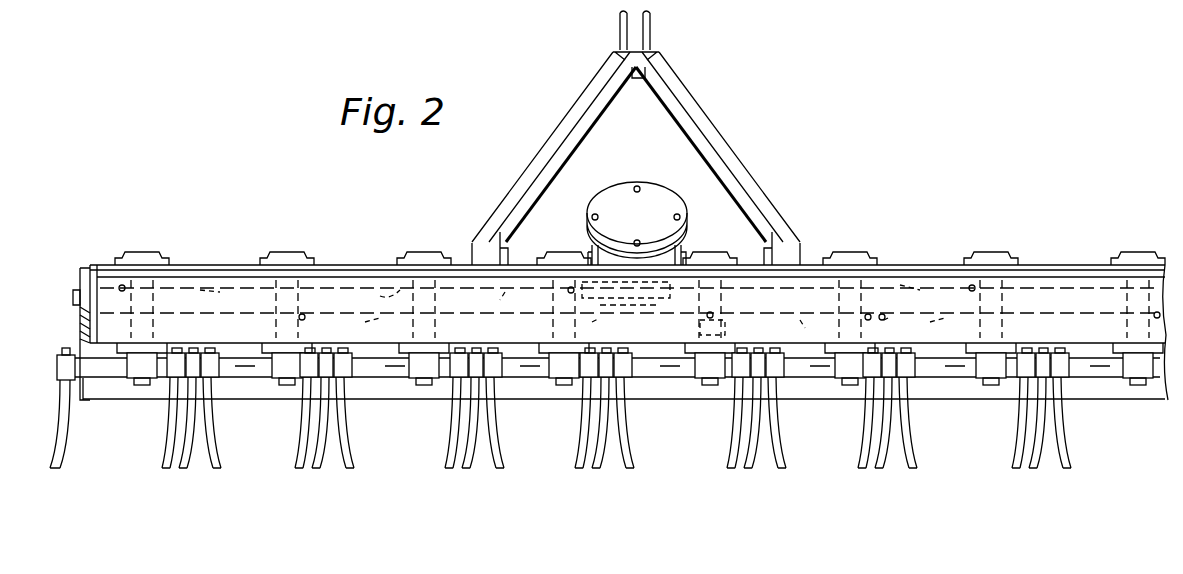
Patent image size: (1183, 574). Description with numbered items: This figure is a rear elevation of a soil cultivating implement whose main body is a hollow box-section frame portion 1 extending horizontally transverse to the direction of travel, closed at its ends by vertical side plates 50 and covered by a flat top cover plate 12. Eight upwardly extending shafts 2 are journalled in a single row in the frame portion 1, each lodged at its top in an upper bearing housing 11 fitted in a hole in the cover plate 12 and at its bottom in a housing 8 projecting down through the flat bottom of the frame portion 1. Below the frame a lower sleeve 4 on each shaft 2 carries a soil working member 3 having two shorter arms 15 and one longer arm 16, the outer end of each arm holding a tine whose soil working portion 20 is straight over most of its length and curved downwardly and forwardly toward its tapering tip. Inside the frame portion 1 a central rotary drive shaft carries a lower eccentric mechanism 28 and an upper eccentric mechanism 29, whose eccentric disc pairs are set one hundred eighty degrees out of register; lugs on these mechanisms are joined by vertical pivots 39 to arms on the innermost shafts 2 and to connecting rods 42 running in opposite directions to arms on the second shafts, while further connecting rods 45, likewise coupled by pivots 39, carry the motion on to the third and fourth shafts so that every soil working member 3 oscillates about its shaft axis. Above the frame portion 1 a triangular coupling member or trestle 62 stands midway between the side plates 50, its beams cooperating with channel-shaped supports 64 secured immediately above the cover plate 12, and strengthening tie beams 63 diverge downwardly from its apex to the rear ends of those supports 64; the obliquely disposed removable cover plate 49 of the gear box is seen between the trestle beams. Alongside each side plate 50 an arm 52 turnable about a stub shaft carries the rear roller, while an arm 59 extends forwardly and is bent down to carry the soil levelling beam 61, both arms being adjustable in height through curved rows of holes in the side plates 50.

The hollow box-section frame portion 1 is at (1068, 275).
The shaft 2 is at (235, 310).
The soil working member 3 is at (158, 456).
The lower sleeve 4 is at (263, 383).
The housing 8 is at (165, 348).
The upper bearing housing 11 is at (145, 252).
The flat top cover plate 12 is at (372, 265).
The shorter arm 15 is at (246, 378).
The longer arm 16 is at (158, 388).
The soil working portion 20 is at (312, 440).
The lower eccentric mechanism 28 is at (724, 334).
The upper eccentric mechanism 29 is at (615, 279).
The pivot 39 is at (733, 282).
The connecting rod 42 is at (505, 292).
The connecting rod 45 is at (215, 288).
The removable cover plate 49 is at (652, 195).
The side plate 50 is at (95, 330).
The arm 52 is at (84, 282).
The arm 59 is at (82, 405).
The soil levelling beam 61 is at (420, 398).
The coupling member or trestle 62 is at (723, 137).
The strengthening tie beam 63 is at (598, 108).
The support 64 is at (470, 258).